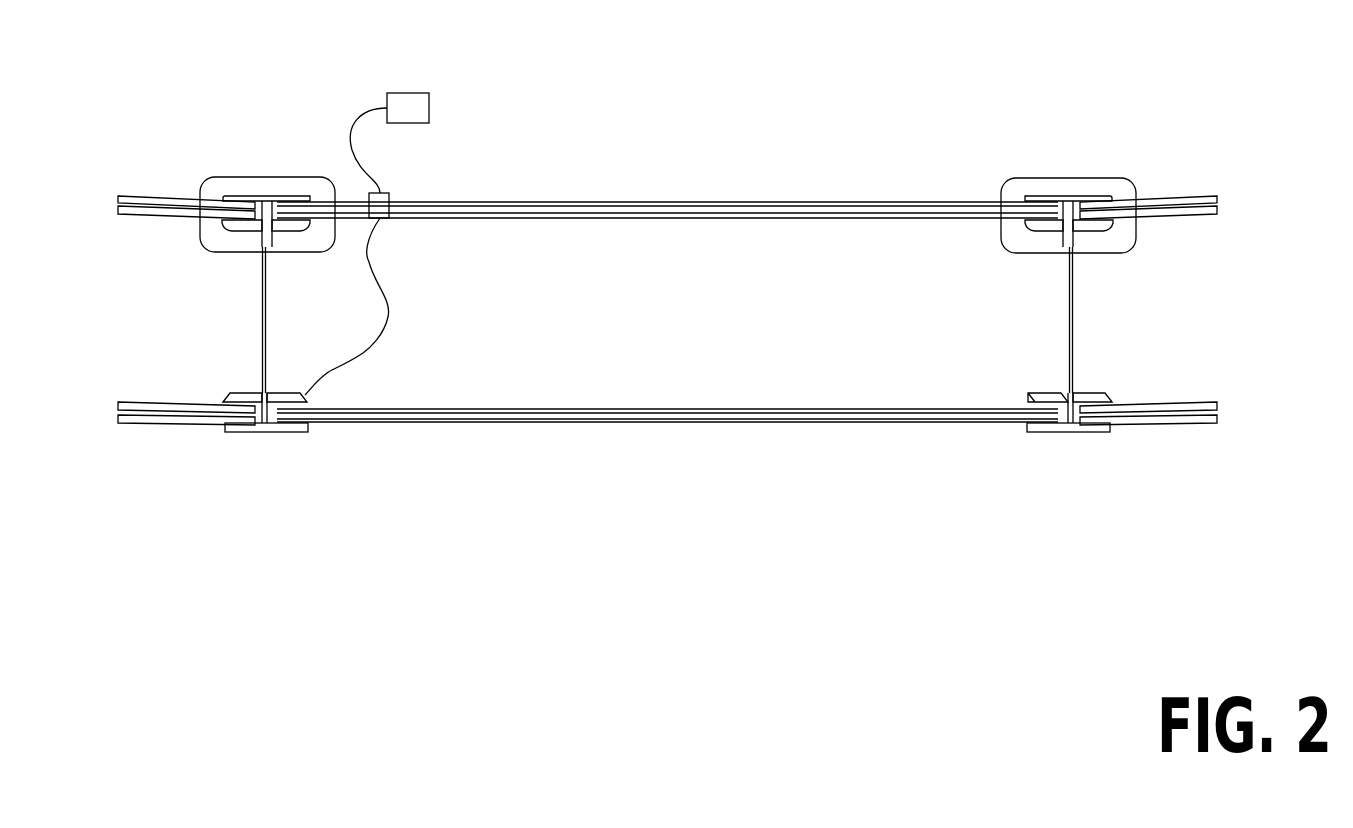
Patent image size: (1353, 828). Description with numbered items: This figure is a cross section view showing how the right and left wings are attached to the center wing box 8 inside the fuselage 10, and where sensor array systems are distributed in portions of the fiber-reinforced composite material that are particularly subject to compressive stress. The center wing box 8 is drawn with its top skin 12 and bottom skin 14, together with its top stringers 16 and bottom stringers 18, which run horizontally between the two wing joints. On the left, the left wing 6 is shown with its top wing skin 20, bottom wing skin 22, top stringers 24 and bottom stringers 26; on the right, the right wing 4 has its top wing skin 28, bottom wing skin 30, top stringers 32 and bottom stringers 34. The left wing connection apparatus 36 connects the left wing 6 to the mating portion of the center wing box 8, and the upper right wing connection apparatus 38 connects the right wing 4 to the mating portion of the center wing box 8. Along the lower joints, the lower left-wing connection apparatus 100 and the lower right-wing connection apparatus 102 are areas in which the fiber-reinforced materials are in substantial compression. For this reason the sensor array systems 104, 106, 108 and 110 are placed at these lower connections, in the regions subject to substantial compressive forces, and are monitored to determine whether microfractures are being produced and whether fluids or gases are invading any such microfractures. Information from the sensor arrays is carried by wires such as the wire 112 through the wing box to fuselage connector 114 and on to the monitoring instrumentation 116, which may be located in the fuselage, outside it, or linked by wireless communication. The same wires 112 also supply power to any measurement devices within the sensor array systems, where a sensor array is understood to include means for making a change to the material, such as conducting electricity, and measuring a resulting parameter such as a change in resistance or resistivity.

The right wing 4 is at (1165, 314).
The left wing 6 is at (173, 310).
The center wing box 8 is at (703, 320).
The fuselage 10 is at (667, 261).
The top skin 12 is at (627, 200).
The bottom skin 14 is at (627, 425).
The top stringers 16 is at (627, 223).
The bottom stringers 18 is at (627, 407).
The top wing skin 20 is at (143, 192).
The bottom wing skin 22 is at (143, 425).
The top stringers 24 is at (143, 220).
The bottom stringers 26 is at (143, 395).
The top wing skin 28 is at (1193, 197).
The bottom wing skin 30 is at (1193, 430).
The top stringers 32 is at (1193, 220).
The bottom stringers 34 is at (1193, 402).
The left wing connection apparatus 36 is at (238, 177).
The upper right wing connection apparatus 38 is at (1097, 177).
The lower left-wing connection apparatus 100 is at (265, 435).
The lower right-wing connection apparatus 102 is at (1072, 435).
The sensor array system 104 is at (243, 383).
The sensor array system 106 is at (290, 383).
The sensor array system 108 is at (1093, 385).
The sensor array system 110 is at (1045, 385).
The wires 112 is at (388, 317).
The wing box to fuselage connector 114 is at (392, 195).
The monitoring instrumentation 116 is at (412, 92).